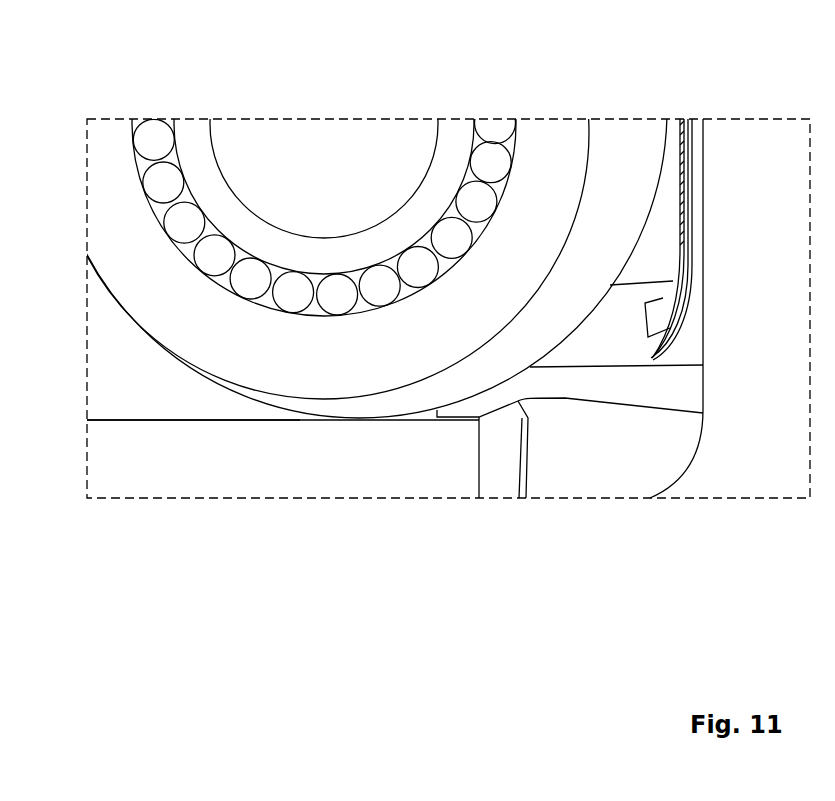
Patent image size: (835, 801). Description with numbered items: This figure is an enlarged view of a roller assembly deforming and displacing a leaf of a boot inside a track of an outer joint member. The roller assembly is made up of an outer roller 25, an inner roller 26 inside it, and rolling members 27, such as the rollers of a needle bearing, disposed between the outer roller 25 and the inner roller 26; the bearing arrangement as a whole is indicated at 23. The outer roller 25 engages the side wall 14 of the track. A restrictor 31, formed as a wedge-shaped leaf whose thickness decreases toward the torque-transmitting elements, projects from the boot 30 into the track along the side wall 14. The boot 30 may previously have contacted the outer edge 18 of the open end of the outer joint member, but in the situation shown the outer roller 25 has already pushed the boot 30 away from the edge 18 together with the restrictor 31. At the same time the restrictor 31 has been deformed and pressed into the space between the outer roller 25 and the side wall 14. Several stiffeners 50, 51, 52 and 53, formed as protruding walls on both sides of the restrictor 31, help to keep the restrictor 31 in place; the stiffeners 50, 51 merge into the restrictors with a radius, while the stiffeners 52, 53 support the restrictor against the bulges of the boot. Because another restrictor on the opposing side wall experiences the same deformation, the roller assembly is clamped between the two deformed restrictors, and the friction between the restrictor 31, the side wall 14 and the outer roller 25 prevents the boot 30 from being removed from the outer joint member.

The side wall 14 is at (177, 420).
The outer edge 18 is at (479, 466).
The bearing 23 is at (333, 148).
The outer roller 25 is at (122, 250).
The inner roller 26 is at (198, 128).
The rolling members 27 is at (497, 152).
The boot 30 is at (773, 421).
The restrictor 31 is at (502, 397).
The stiffener 50 is at (663, 362).
The stiffener 51 is at (663, 303).
The stiffener 52 is at (248, 488).
The stiffener 53 is at (617, 478).